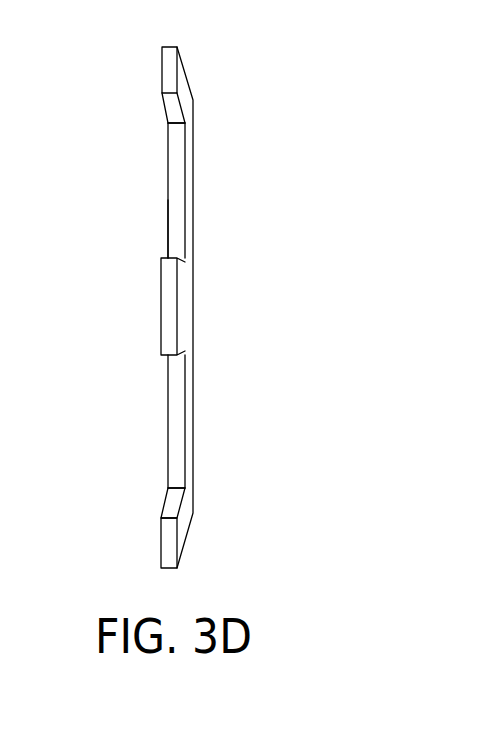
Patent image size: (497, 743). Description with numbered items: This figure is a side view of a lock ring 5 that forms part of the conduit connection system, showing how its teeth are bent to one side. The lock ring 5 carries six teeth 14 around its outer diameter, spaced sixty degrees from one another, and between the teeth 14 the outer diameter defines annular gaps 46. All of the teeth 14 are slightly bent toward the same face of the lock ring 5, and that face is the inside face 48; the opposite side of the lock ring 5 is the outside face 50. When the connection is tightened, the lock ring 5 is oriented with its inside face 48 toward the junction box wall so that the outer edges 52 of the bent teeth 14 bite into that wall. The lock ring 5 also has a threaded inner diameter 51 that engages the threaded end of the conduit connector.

The lock ring 5 is at (154, 300).
The teeth 14 is at (187, 95).
The annular gaps 46 is at (175, 177).
The inside face 48 is at (167, 230).
The outside face 50 is at (193, 177).
The threaded inner diameter 51 is at (193, 413).
The outer edges 52 is at (160, 302).